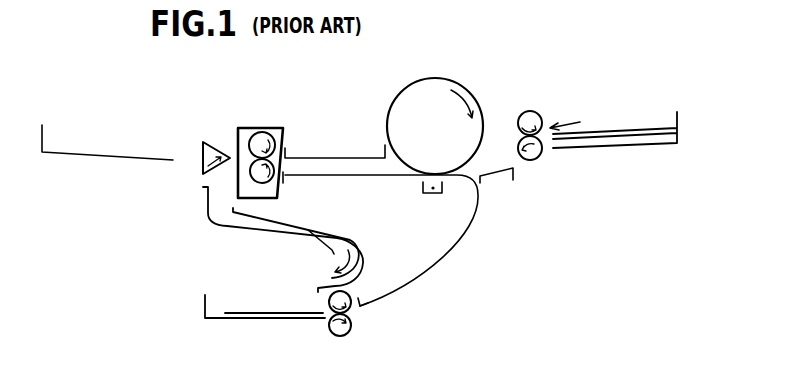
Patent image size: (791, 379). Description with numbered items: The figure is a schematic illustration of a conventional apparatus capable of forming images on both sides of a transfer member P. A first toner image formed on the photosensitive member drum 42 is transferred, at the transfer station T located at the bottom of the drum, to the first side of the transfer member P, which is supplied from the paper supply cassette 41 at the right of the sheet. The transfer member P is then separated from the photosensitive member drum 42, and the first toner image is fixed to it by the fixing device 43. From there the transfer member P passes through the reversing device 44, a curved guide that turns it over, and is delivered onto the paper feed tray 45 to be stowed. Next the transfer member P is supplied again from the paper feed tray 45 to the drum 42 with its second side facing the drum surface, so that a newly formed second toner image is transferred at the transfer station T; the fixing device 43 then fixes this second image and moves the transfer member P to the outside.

The paper supply cassette 41 is at (614, 149).
The photosensitive member drum 42 is at (470, 91).
The fixing device 43 is at (260, 127).
The reversing device 44 is at (256, 239).
The paper feed tray 45 is at (287, 322).
The transfer member P is at (614, 131).
The transfer station T is at (432, 174).